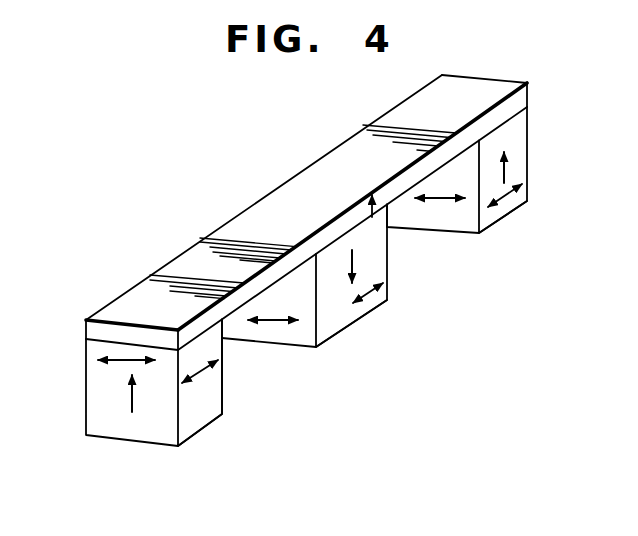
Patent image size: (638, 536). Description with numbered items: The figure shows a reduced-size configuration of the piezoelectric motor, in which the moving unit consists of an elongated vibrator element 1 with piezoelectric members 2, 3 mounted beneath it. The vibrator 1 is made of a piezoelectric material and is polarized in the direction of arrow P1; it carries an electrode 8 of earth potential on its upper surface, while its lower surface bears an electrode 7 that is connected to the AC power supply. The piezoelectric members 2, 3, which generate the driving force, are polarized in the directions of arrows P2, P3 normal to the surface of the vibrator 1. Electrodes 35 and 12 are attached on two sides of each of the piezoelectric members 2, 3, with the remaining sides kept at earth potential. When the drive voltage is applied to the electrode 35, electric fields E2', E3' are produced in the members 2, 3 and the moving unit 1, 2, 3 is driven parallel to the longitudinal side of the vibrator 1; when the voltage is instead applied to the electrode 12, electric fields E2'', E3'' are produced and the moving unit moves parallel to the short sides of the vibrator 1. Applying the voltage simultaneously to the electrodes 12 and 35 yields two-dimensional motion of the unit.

The vibrator element 1 is at (324, 168).
The piezoelectric member 2 is at (86, 408).
The piezoelectric member 3 is at (387, 272).
The electrode 7 is at (530, 103).
The electrode 8 is at (527, 82).
The electrode 12 is at (205, 400).
The electrode 35 is at (143, 430).
The polarization direction of vibrator P1 is at (376, 197).
The polarization direction of piezoelectric member P2 is at (130, 400).
The polarization direction of piezoelectric member P3 is at (350, 262).
The electric field E2' is at (378, 306).
The electric field E2'' is at (273, 282).
The electric field E3' is at (394, 310).
The electric field E3'' is at (327, 364).